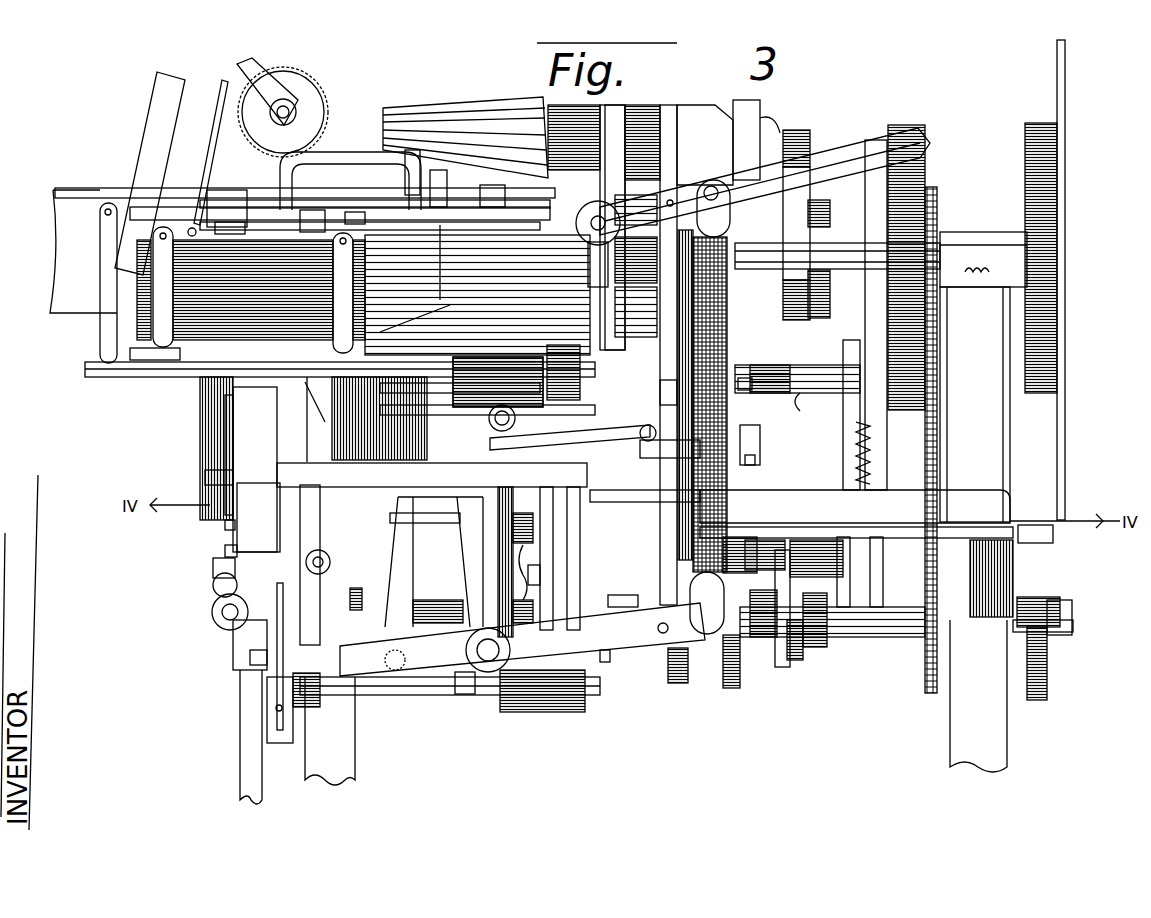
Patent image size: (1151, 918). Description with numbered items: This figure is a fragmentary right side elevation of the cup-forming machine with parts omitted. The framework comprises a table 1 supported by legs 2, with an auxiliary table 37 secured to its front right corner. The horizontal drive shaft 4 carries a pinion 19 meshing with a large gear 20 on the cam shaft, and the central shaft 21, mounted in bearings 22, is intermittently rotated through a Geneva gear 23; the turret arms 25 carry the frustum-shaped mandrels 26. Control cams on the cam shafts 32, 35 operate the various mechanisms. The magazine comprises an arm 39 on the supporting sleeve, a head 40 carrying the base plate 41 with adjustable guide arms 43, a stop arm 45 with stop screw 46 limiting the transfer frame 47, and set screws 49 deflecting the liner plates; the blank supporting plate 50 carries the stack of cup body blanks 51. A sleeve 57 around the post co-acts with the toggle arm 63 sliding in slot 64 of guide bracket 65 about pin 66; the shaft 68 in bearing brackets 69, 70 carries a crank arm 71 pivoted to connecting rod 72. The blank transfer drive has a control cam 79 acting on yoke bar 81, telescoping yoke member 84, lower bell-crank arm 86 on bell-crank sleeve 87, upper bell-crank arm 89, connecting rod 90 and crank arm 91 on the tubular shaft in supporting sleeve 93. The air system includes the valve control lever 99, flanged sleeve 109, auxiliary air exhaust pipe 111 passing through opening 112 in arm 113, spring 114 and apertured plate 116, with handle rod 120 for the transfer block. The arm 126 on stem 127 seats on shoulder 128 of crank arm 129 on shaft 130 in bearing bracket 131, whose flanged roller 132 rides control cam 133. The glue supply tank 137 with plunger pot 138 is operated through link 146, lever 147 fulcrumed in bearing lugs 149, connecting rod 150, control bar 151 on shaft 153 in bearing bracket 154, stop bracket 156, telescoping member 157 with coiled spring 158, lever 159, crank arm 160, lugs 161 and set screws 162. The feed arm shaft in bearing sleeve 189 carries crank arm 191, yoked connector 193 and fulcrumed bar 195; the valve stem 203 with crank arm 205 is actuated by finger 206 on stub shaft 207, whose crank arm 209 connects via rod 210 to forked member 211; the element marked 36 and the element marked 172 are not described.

The table 1 is at (960, 497).
The legs 2 is at (993, 737).
The horizontal drive shaft 4 is at (805, 404).
The pinion 19 is at (915, 405).
The large gear 20 is at (922, 170).
The horizontal central shaft 21 is at (833, 245).
The bearings 22 is at (978, 243).
The Geneva gear 23 is at (1025, 143).
The arms 25 is at (603, 341).
The mandrel 26 is at (430, 118).
The cam shaft 32 is at (245, 612).
The cam shaft 35 is at (440, 598).
The block 36 is at (935, 585).
The auxiliary table 37 is at (362, 452).
The arm 39 is at (292, 465).
The head 40 is at (223, 384).
The magazine base plate 41 is at (182, 376).
The adjustable guide arms 43 is at (147, 310).
The stop arm 45 is at (110, 295).
The stop screw 46 is at (100, 225).
The cup blank transfer frame 47 is at (610, 178).
The set screw 49 is at (163, 230).
The blank supporting plate 50 is at (428, 314).
The cup body blanks 51 is at (160, 365).
The sleeve 57 is at (255, 658).
The toggle arm 63 is at (278, 682).
The slot 64 is at (280, 635).
The guide bracket 65 is at (275, 733).
The pin 66 is at (275, 709).
The shaft 68 is at (410, 697).
The bearing bracket 69 is at (312, 707).
The bearing bracket 70 is at (572, 715).
The crank arm 71 is at (490, 660).
The connecting rod 72 is at (535, 572).
The control cam 79 is at (1047, 678).
The yoke bar 81 is at (1060, 608).
The yoke member 84 is at (1065, 633).
The lower bell-crank arm 86 is at (1022, 600).
The bell-crank sleeve 87 is at (1000, 565).
The upper bell-crank arm 89 is at (1035, 527).
The connecting rod 90 is at (905, 530).
The crank arm 91 is at (220, 480).
The supporting sleeve 93 is at (210, 438).
The valve control lever 99 is at (192, 232).
The flanged sleeve 109 is at (232, 232).
The auxiliary air exhaust pipe 111 is at (350, 152).
The opening 112 is at (355, 220).
The arm 113 is at (360, 207).
The spring 114 is at (213, 212).
The apertured plate 116 is at (395, 222).
The handle rod 120 is at (252, 216).
The arm 126 is at (230, 178).
The stem 127 is at (225, 527).
The shoulder 128 is at (227, 553).
The crank arm 129 is at (215, 565).
The shaft 130 is at (323, 575).
The bearing bracket 131 is at (318, 512).
The flanged roller 132 is at (215, 581).
The control cam 133 is at (215, 610).
The supply tank 137 is at (381, 294).
The plunger pot 138 is at (345, 400).
The link 146 is at (665, 210).
The lever 147 is at (822, 155).
The bearing lugs 149 is at (585, 244).
The connecting rod 150 is at (652, 498).
The control bar 151 is at (522, 639).
The shaft 153 is at (458, 694).
The bearing bracket 154 is at (483, 548).
The stop bracket 156 is at (358, 602).
The telescoping connecting member 157 is at (696, 178).
The coiled spring 158 is at (727, 358).
The lever 159 is at (674, 652).
The crank arm 160 is at (607, 662).
The lugs 161 is at (615, 598).
The set screws 162 is at (650, 718).
The plate 172 is at (440, 225).
The bearing sleeve 189 is at (720, 328).
The crank arm 191 is at (690, 392).
The yoked connector 193 is at (770, 378).
The fulcrumed bar 195 is at (745, 436).
The valve stem 203 is at (695, 447).
The crank arm 205 is at (755, 462).
The finger 206 is at (745, 482).
The stub shaft 207 is at (760, 545).
The crank arm 209 is at (780, 642).
The connecting rod 210 is at (815, 642).
The forked member 211 is at (790, 668).